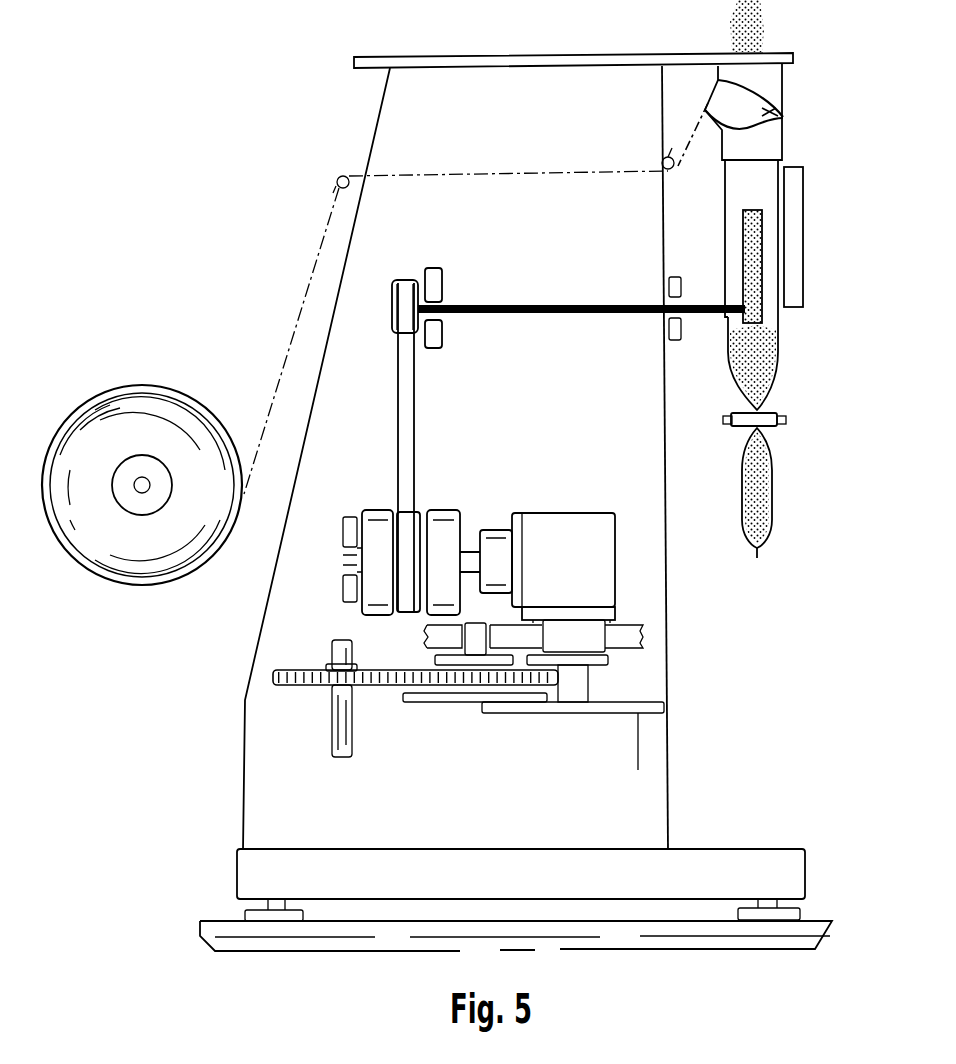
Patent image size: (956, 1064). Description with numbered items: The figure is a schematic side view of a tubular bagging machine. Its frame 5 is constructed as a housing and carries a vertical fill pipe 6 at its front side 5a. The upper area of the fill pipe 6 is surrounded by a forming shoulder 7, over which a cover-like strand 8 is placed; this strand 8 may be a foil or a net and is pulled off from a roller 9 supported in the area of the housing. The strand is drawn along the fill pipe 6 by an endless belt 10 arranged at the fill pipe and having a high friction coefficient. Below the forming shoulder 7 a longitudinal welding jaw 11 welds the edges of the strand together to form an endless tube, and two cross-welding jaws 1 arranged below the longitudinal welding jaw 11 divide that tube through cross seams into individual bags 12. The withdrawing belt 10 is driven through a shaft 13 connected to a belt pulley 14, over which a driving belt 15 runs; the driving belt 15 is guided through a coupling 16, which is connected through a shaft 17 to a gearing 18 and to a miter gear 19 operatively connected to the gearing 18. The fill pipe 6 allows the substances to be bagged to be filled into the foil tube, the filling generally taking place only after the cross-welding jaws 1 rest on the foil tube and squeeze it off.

The cross-welding jaws 1 is at (737, 430).
The frame 5 is at (376, 122).
The front side 5a is at (667, 555).
The fill pipe 6 is at (770, 78).
The forming shoulder 7 is at (758, 113).
The cover-like strand 8 is at (690, 133).
The roller 9 is at (185, 430).
The endless belt 10 is at (787, 245).
The longitudinal welding jaw 11 is at (848, 239).
The bags 12 is at (765, 533).
The shaft 13 is at (537, 305).
The belt pulley 14 is at (392, 300).
The driving belt 15 is at (408, 390).
The coupling 16 is at (440, 503).
The shaft 17 is at (468, 552).
The gearing 18 is at (516, 502).
The miter gear 19 is at (581, 505).